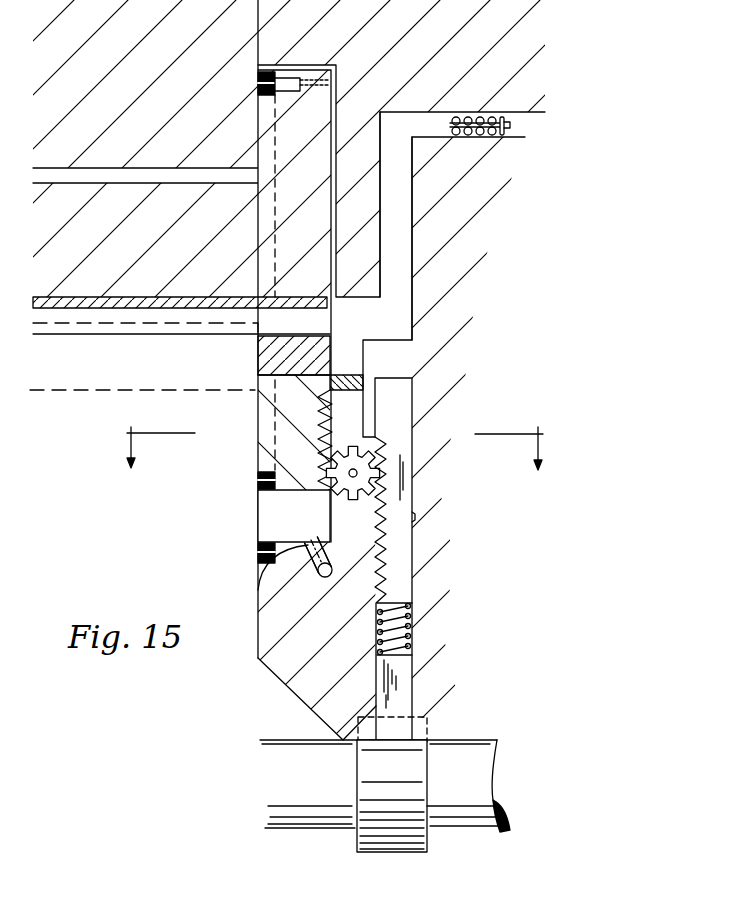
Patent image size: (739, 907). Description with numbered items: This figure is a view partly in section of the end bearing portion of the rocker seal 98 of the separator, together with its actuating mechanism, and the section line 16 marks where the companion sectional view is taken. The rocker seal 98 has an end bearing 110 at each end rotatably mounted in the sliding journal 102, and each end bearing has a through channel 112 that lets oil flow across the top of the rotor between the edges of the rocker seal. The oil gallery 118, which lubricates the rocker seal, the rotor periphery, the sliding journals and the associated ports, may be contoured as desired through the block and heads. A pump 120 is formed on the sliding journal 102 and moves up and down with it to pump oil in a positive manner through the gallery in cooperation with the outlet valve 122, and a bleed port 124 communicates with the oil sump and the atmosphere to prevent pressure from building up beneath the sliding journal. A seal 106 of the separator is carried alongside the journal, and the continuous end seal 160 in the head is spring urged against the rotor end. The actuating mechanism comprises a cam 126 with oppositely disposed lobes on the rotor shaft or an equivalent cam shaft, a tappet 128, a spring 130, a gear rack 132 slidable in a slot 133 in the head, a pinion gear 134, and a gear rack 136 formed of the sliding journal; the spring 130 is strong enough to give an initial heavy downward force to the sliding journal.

The rocker seal 98 is at (199, 297).
The sliding journal 102 is at (285, 492).
The seal 106 is at (258, 88).
The end bearing 110 is at (276, 380).
The through channel 112 is at (318, 326).
The oil gallery 118 is at (405, 243).
The pump 120 is at (343, 396).
The outlet valve 122 is at (510, 125).
The bleed port 124 is at (262, 581).
The cam 126 is at (428, 840).
The tappet 128 is at (414, 665).
The spring 130 is at (413, 625).
The gear rack 132 is at (413, 550).
The slot 133 is at (414, 515).
The pinion gear 134 is at (362, 464).
The gear rack 136 is at (331, 410).
The continuous end seal 160 is at (258, 553).
The section line 16- 16 is at (333, 461).